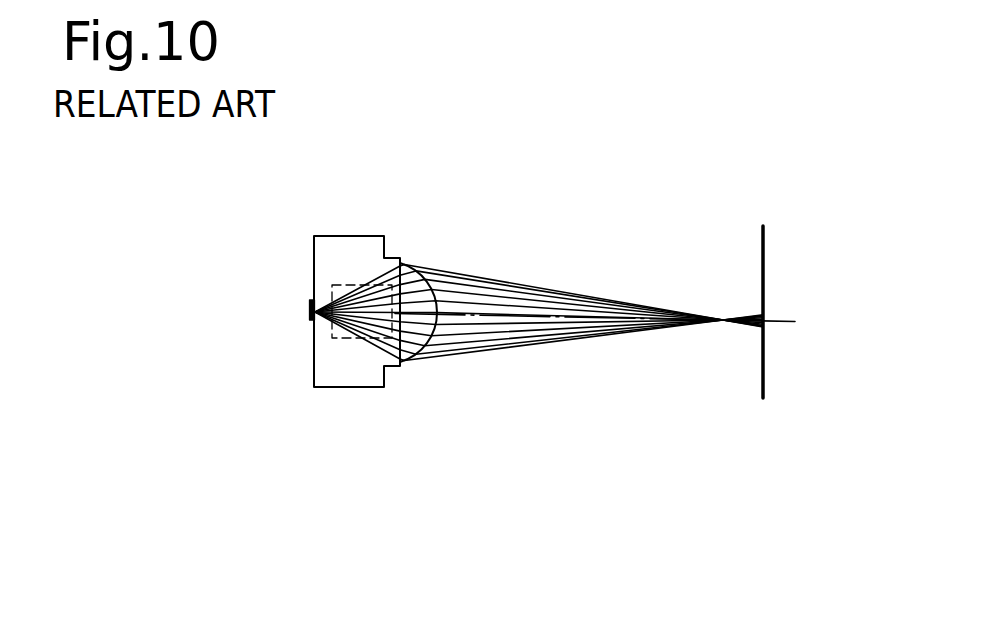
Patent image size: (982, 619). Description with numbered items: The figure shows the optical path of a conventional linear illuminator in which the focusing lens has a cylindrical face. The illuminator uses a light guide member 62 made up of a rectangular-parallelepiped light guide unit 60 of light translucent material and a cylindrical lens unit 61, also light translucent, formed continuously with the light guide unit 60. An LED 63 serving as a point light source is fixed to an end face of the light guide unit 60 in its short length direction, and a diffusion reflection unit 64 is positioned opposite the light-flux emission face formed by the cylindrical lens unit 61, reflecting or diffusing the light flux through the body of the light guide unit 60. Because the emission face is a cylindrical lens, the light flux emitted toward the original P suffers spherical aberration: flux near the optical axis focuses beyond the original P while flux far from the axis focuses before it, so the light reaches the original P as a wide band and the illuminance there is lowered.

The light guide unit 60 is at (350, 377).
The cylindrical lens unit 61 is at (407, 365).
The light guide member 62 is at (327, 521).
The LED 63 is at (352, 285).
The diffusion reflection unit 64 is at (310, 302).
The original P is at (758, 373).